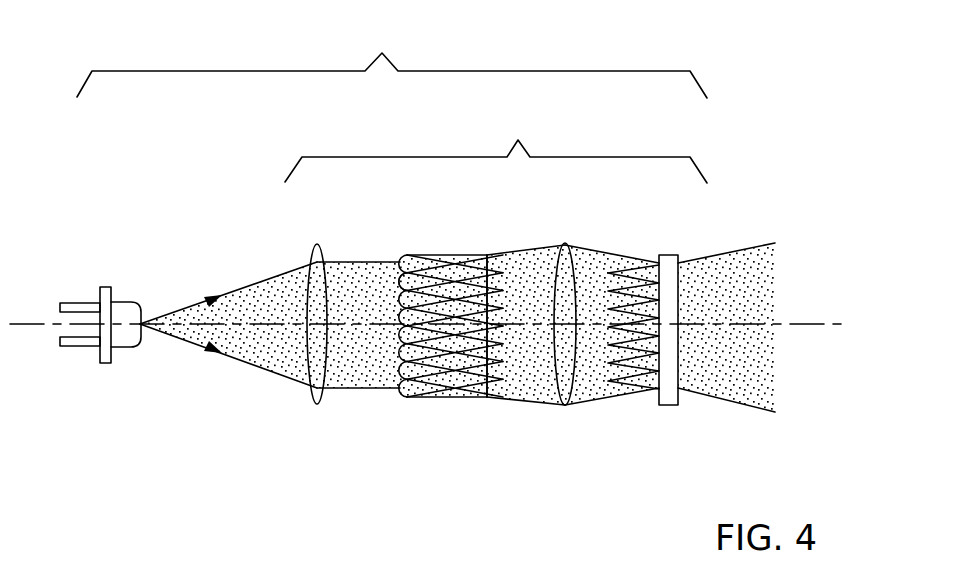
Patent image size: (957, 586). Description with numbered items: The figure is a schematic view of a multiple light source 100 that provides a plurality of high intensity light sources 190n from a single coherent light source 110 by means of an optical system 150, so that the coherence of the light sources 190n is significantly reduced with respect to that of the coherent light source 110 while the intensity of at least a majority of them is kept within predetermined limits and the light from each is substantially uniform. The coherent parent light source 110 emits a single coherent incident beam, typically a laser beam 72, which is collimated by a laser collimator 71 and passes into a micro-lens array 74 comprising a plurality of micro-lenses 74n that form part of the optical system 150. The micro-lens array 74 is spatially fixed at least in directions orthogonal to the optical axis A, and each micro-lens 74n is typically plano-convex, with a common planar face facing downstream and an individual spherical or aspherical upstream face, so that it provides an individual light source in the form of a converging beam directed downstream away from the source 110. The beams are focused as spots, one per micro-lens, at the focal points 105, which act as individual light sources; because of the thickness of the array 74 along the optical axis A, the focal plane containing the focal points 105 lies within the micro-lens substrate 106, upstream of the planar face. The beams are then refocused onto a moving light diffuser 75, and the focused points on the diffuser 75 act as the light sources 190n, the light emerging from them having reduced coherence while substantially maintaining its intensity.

The multiple light source 100 is at (392, 59).
The optical system 150 is at (496, 141).
The coherent light source 110 is at (130, 308).
The laser beam 72 is at (240, 290).
The laser collimator 71 is at (318, 403).
The micro-lens array 74 is at (428, 398).
The micro-lens 74n is at (378, 278).
The focal point 105 is at (458, 372).
The micro-lens substrate 106 is at (479, 392).
The light source 190n is at (648, 385).
The moving light diffuser 75 is at (667, 263).
The optical axis A is at (820, 325).